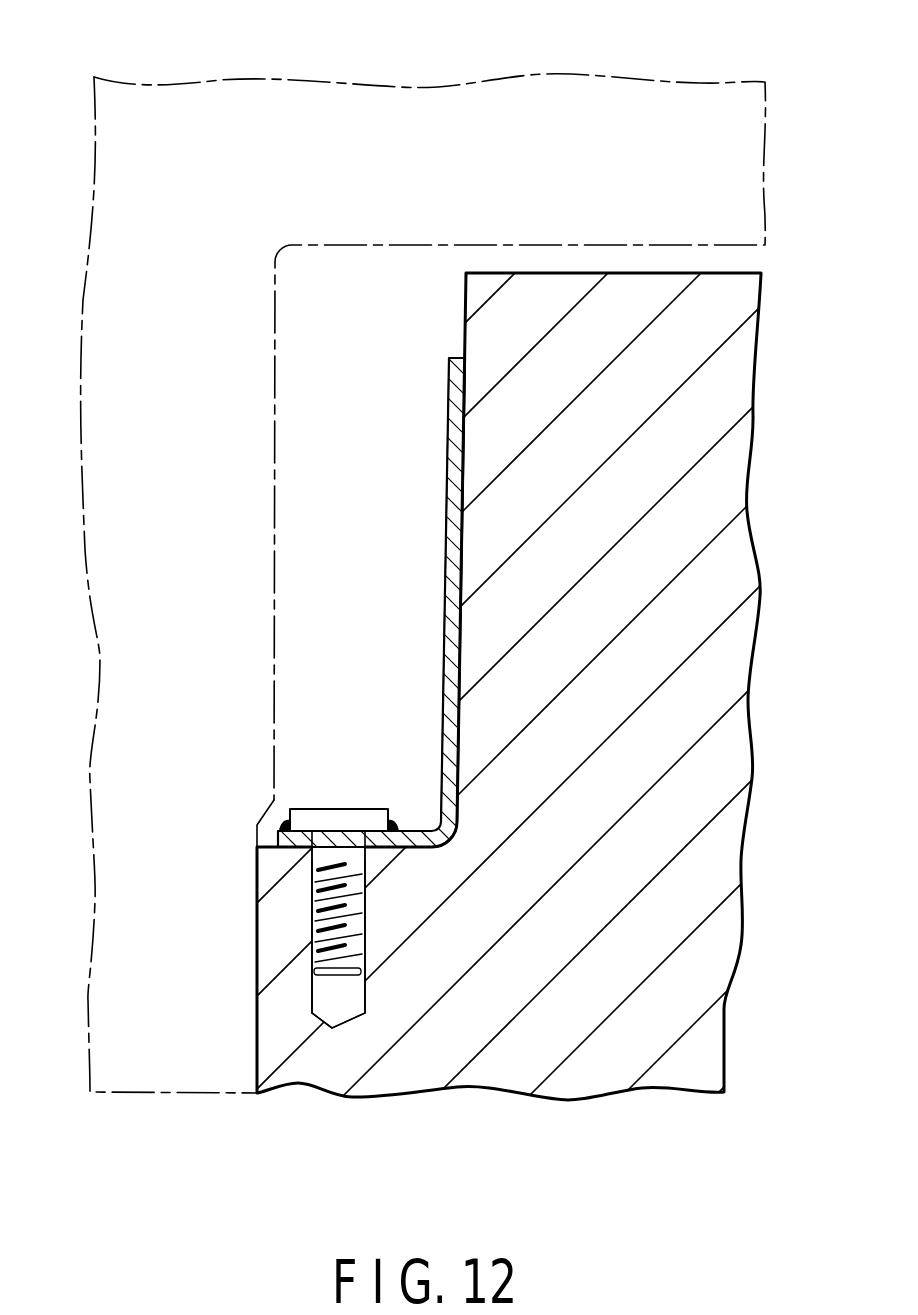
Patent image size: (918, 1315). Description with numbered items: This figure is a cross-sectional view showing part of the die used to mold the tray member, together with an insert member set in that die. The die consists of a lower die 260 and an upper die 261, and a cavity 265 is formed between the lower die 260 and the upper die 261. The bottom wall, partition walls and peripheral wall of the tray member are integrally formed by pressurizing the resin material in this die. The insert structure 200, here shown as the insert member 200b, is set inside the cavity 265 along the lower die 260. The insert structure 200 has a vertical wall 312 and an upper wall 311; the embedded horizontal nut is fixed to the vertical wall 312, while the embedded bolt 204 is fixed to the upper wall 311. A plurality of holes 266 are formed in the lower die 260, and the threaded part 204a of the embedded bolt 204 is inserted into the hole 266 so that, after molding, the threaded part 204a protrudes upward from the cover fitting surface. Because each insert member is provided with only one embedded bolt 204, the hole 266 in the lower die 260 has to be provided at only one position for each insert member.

The lower die 260 is at (524, 958).
The upper die 261 is at (441, 135).
The hole 266 is at (365, 976).
The insert structure 200 is at (436, 364).
The insert member 200b is at (448, 462).
The vertical wall 312 is at (448, 662).
The upper wall 311 is at (287, 846).
The cavity 265 is at (404, 544).
The embedded bolt 204 is at (355, 903).
The threaded part 204a is at (310, 958).